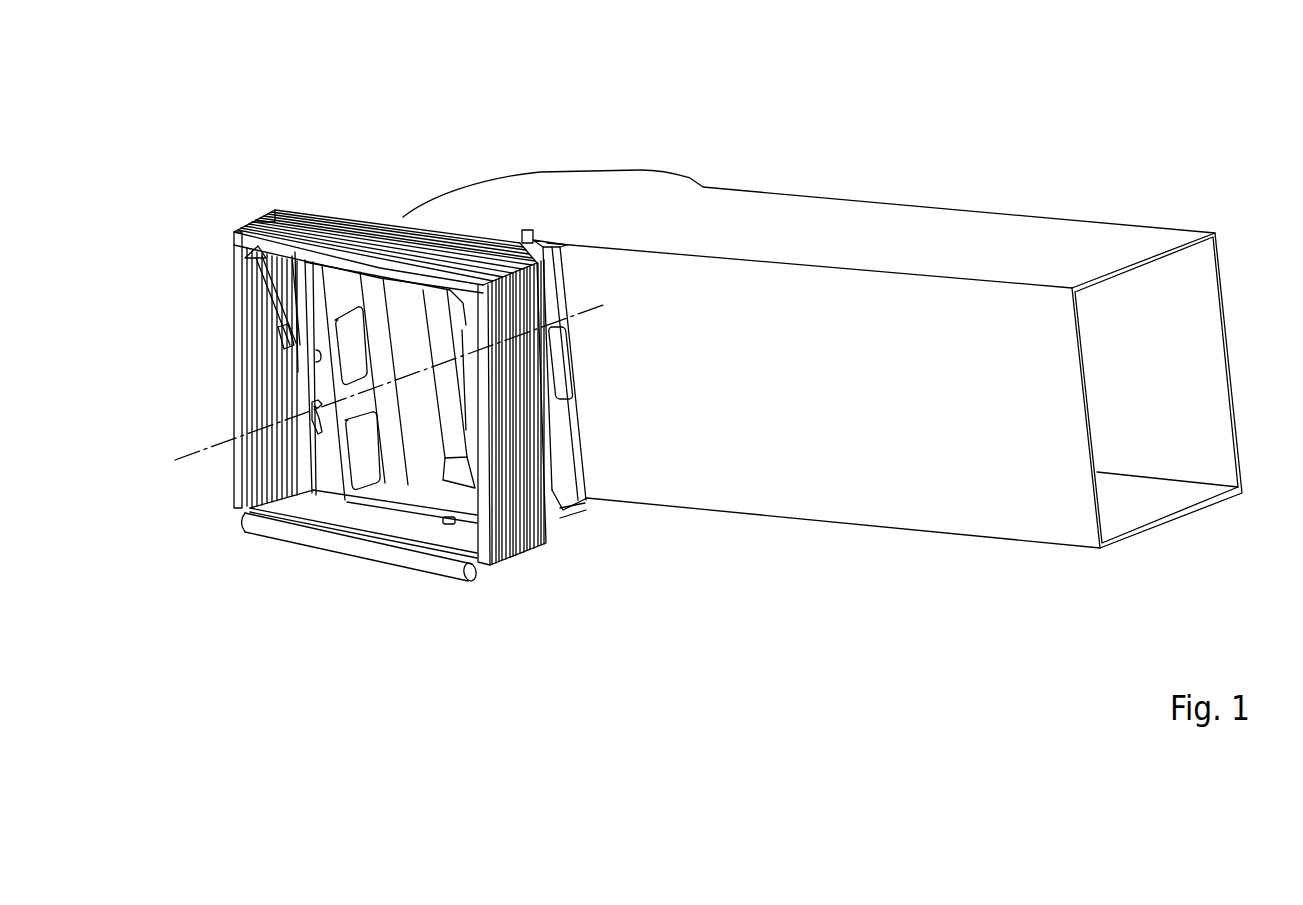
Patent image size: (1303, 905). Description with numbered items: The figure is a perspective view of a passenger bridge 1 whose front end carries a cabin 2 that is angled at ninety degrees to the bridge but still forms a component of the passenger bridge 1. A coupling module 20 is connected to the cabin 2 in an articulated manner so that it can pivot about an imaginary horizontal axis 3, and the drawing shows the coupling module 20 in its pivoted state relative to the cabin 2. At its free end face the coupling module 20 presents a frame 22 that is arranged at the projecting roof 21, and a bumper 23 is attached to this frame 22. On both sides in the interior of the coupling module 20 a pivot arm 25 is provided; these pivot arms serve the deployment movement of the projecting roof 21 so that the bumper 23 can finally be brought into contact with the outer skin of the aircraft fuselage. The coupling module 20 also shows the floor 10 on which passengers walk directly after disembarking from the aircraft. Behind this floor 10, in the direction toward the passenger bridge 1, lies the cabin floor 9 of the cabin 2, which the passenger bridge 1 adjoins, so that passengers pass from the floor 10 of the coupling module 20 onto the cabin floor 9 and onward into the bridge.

The passenger bridge 1 is at (948, 216).
The cabin 2 is at (572, 428).
The imaginary horizontal axis 3 is at (212, 440).
The cabin floor 9 is at (450, 498).
The floor 10 is at (385, 533).
The coupling module 20 is at (256, 214).
The projecting roof 21 is at (445, 252).
The frame 22 is at (377, 262).
The bumper 23 is at (316, 262).
The pivot arm 25 is at (273, 288).